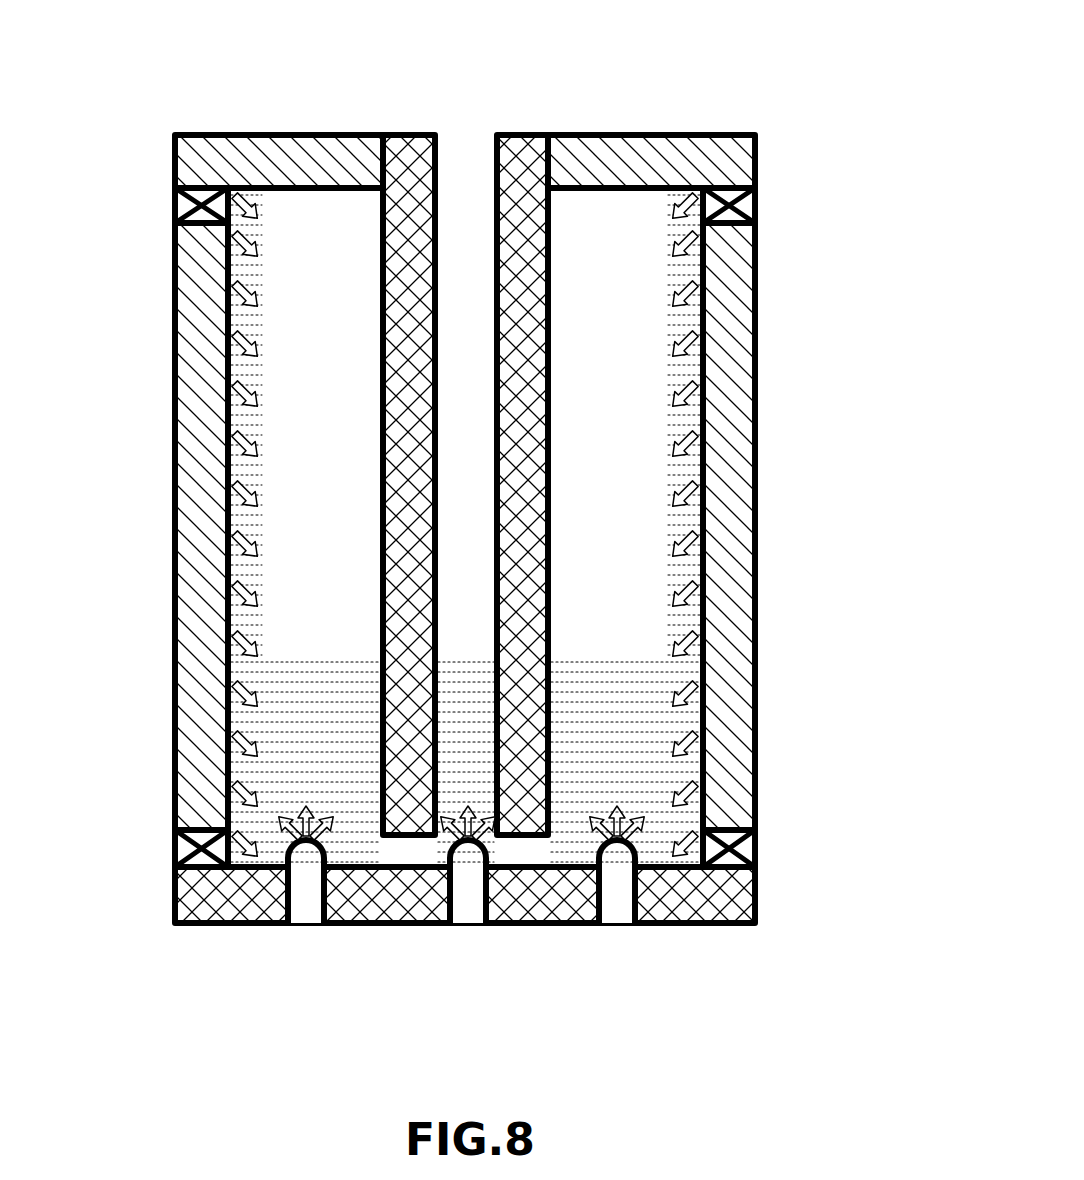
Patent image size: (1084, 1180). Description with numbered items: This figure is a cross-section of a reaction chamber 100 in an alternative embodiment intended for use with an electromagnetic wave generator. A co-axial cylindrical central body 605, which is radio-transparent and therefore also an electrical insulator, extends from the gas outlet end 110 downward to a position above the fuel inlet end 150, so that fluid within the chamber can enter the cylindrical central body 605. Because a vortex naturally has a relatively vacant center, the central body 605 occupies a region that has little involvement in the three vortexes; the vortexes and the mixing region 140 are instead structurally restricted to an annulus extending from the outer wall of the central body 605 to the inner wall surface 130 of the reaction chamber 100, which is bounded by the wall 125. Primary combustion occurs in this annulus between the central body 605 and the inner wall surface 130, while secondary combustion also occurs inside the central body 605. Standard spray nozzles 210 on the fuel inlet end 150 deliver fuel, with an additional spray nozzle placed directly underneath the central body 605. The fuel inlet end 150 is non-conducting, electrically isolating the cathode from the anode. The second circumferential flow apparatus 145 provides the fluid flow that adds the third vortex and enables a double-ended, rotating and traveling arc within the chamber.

The reaction chamber 100 is at (140, 108).
The gas outlet end 110 is at (667, 152).
The co-axial cylindrical central body 605 is at (520, 210).
The wall 125 is at (723, 360).
The inner wall surface 130 is at (672, 600).
The mixing region 140 is at (593, 703).
The second circumferential flow apparatus 145 is at (755, 845).
The fuel inlet end 150 is at (722, 900).
The spray nozzles 210 is at (613, 888).